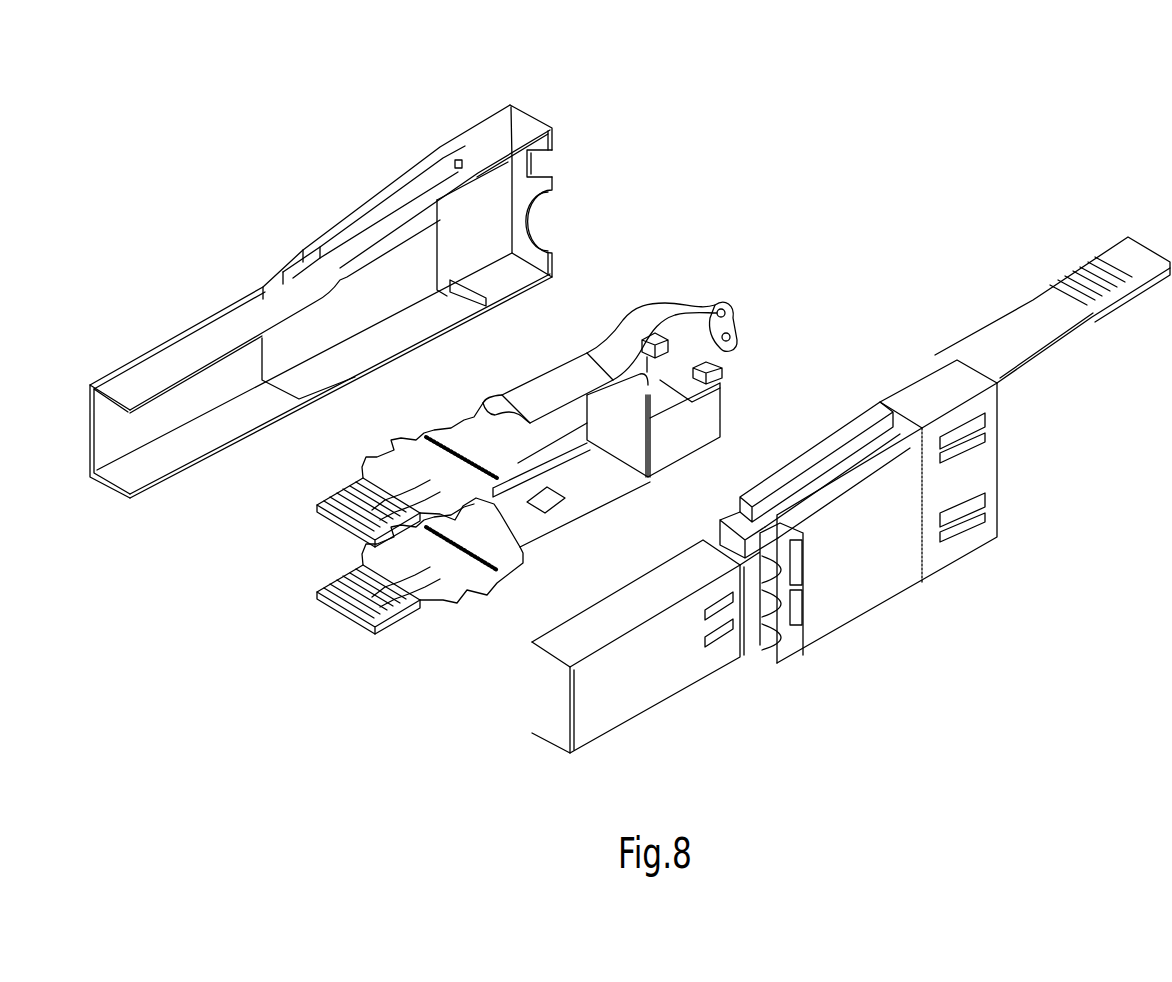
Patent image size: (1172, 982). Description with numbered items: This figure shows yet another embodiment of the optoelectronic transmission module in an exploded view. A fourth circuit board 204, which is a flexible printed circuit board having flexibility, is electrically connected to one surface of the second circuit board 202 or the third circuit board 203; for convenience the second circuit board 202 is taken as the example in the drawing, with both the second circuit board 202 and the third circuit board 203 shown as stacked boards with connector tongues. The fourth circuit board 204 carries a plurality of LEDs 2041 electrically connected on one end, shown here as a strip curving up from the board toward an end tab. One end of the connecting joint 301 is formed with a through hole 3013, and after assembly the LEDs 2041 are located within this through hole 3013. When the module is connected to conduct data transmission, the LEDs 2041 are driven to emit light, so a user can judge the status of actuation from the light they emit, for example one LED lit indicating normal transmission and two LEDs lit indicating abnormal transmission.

The connecting joint 301 is at (492, 132).
The through hole 3013 is at (555, 162).
The second circuit board 202 is at (347, 477).
The third circuit board 203 is at (432, 613).
The fourth circuit board 204 is at (690, 303).
The LEDs 2041 is at (735, 335).